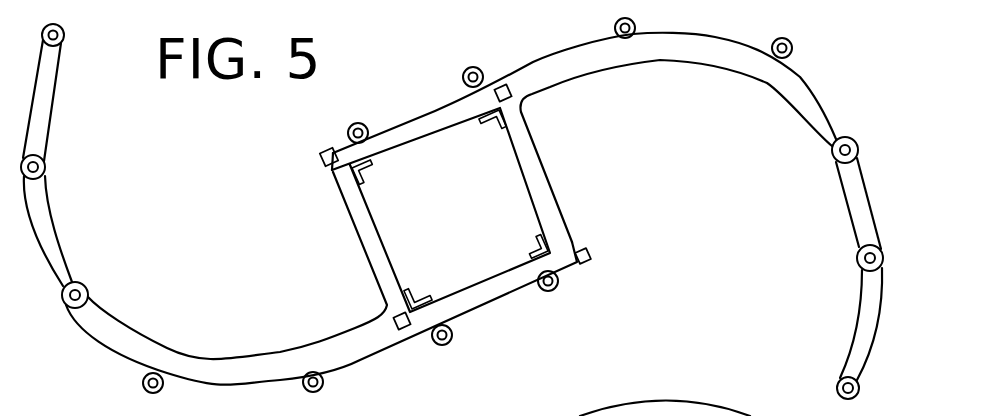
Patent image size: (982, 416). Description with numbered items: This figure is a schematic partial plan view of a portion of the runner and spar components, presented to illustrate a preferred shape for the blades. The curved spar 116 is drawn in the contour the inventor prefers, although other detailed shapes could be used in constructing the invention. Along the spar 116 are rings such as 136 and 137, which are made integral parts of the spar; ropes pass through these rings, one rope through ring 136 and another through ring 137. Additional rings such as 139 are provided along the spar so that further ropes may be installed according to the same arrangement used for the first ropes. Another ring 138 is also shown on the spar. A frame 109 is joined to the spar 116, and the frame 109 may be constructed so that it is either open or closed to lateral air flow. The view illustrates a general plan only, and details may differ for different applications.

The frame 109 is at (367, 233).
The spar 116 is at (135, 348).
The ring 136 is at (352, 126).
The ring 137 is at (143, 384).
The fastener 138 is at (615, 27).
The ring 139 is at (64, 33).